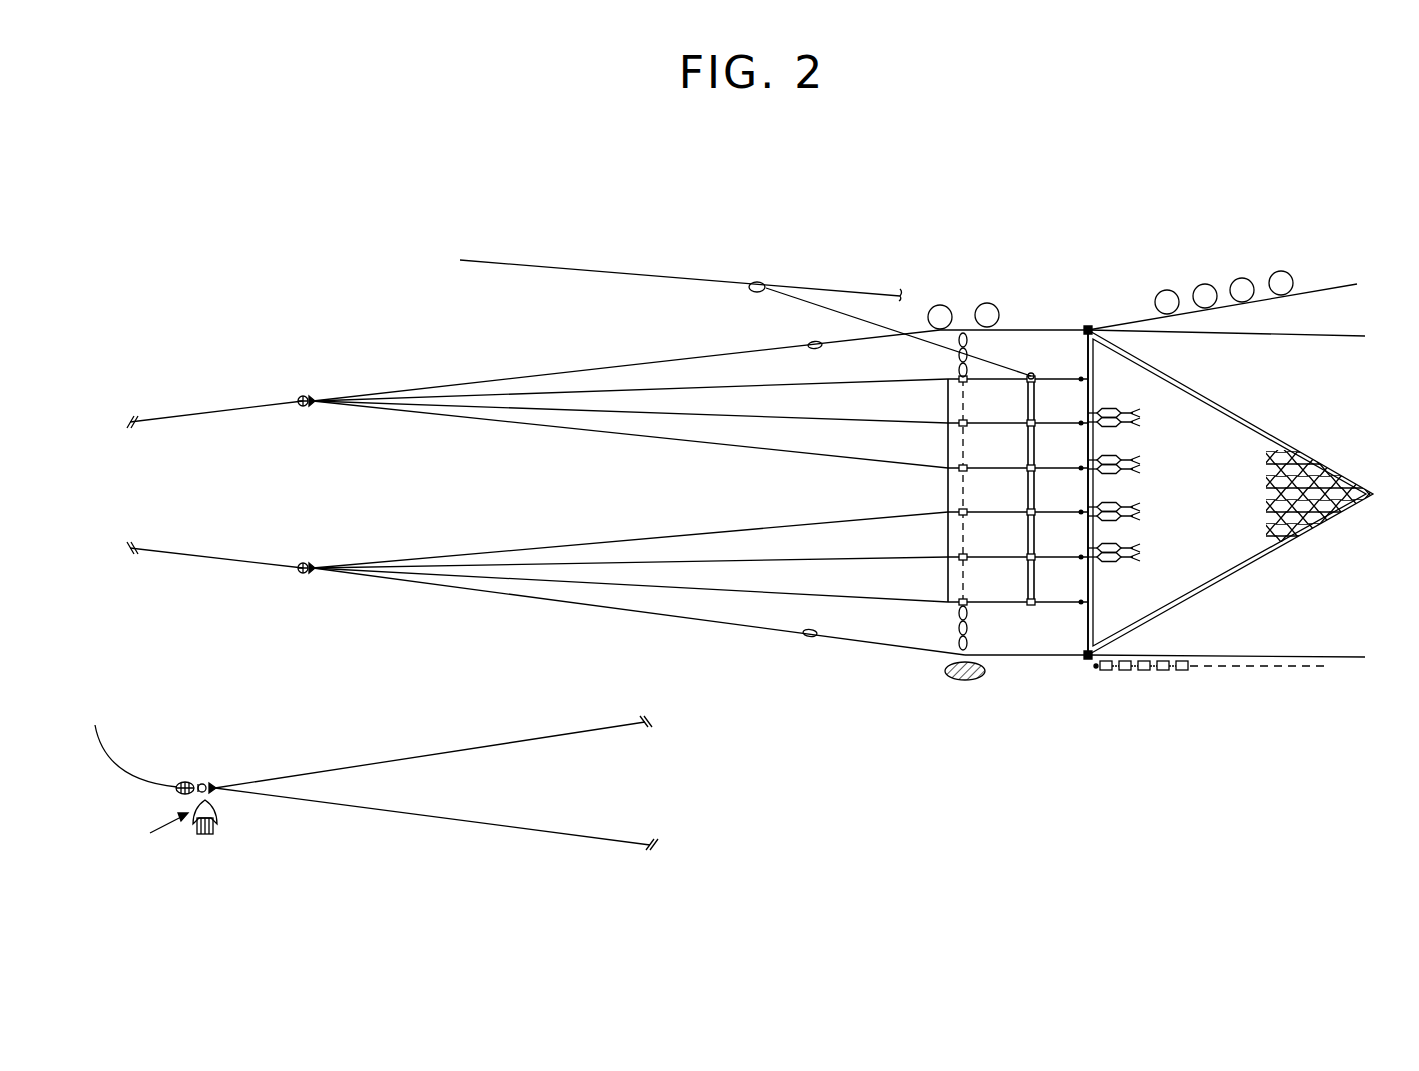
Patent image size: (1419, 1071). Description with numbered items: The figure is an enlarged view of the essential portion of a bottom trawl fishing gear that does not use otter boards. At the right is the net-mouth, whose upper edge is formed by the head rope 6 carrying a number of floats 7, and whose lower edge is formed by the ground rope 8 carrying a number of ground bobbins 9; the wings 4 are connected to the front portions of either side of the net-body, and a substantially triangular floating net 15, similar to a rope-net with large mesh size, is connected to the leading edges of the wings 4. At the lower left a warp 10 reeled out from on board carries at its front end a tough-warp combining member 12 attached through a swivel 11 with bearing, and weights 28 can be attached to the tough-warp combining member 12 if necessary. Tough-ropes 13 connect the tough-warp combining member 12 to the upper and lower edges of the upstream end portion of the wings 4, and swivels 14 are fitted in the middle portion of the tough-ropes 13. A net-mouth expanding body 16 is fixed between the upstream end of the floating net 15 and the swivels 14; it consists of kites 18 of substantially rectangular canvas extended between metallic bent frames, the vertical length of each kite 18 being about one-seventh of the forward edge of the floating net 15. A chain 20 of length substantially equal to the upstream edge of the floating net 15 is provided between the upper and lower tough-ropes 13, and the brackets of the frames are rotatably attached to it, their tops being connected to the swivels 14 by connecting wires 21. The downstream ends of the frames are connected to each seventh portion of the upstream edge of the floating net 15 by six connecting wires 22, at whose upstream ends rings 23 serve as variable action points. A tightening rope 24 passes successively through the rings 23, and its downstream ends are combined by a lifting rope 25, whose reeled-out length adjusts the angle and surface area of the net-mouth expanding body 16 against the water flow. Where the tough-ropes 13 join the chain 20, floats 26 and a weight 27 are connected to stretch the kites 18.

The wings 4 is at (1312, 640).
The head rope 6 is at (1318, 290).
The floats 7 is at (1207, 287).
The ground rope 8 is at (1246, 657).
The ground bobbins 9 is at (1182, 676).
The warps 10 is at (118, 760).
The swivels with bearing 11 is at (185, 780).
The tough-warp combining member 12 is at (210, 782).
The tough-rope 13 is at (175, 412).
The swivels 14 is at (303, 395).
The floating net 15 is at (1197, 572).
The net-mouth expanding body 16 is at (945, 493).
The kites 18 is at (980, 540).
The chain 20 is at (950, 628).
The connecting wires 21 is at (574, 412).
The connecting wires 22 is at (1055, 608).
The rings 23 is at (1036, 372).
The tightening rope 24 is at (866, 318).
The lifting rope 25 is at (606, 272).
The floats 26 is at (962, 308).
The weight 27 is at (965, 681).
The weights 28 is at (205, 836).